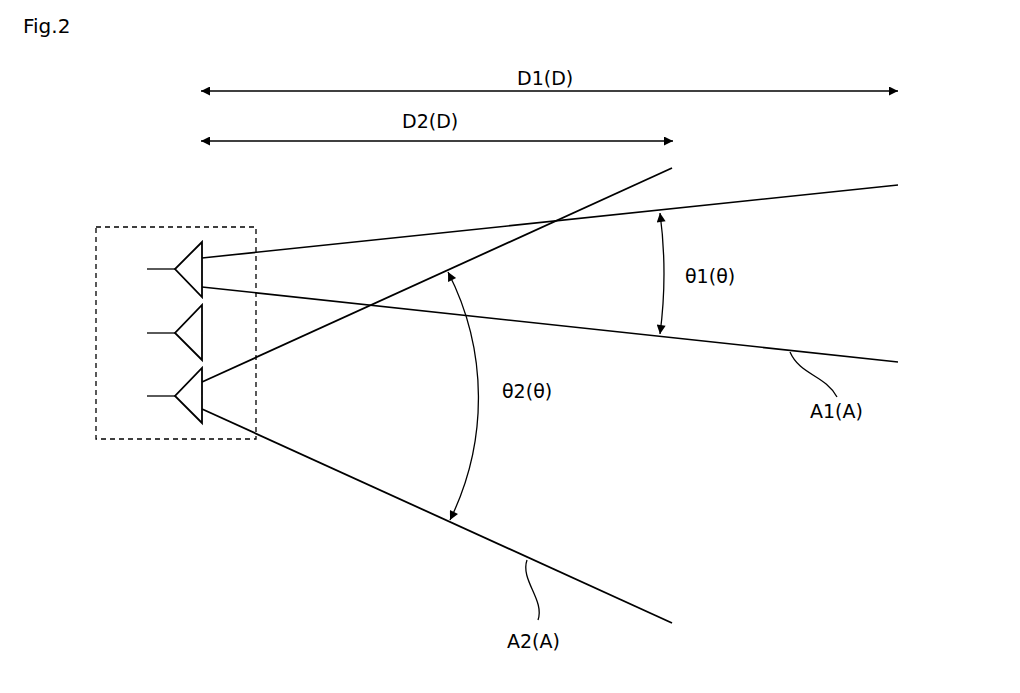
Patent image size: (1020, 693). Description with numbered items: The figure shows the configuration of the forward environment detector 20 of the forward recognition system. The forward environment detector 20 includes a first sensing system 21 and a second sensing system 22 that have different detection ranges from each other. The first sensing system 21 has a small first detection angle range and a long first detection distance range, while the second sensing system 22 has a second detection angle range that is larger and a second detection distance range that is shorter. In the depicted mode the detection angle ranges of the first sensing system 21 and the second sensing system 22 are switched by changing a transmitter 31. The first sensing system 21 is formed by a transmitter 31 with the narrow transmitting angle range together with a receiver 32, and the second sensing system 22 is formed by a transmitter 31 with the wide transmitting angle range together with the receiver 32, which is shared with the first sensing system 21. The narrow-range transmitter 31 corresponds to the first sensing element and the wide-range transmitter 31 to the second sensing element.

The forward environment detector 20 is at (176, 190).
The first sensing system 21 is at (128, 242).
The second sensing system 22 is at (128, 422).
The transmitter 31 is at (190, 250).
The receiver 32 is at (183, 322).